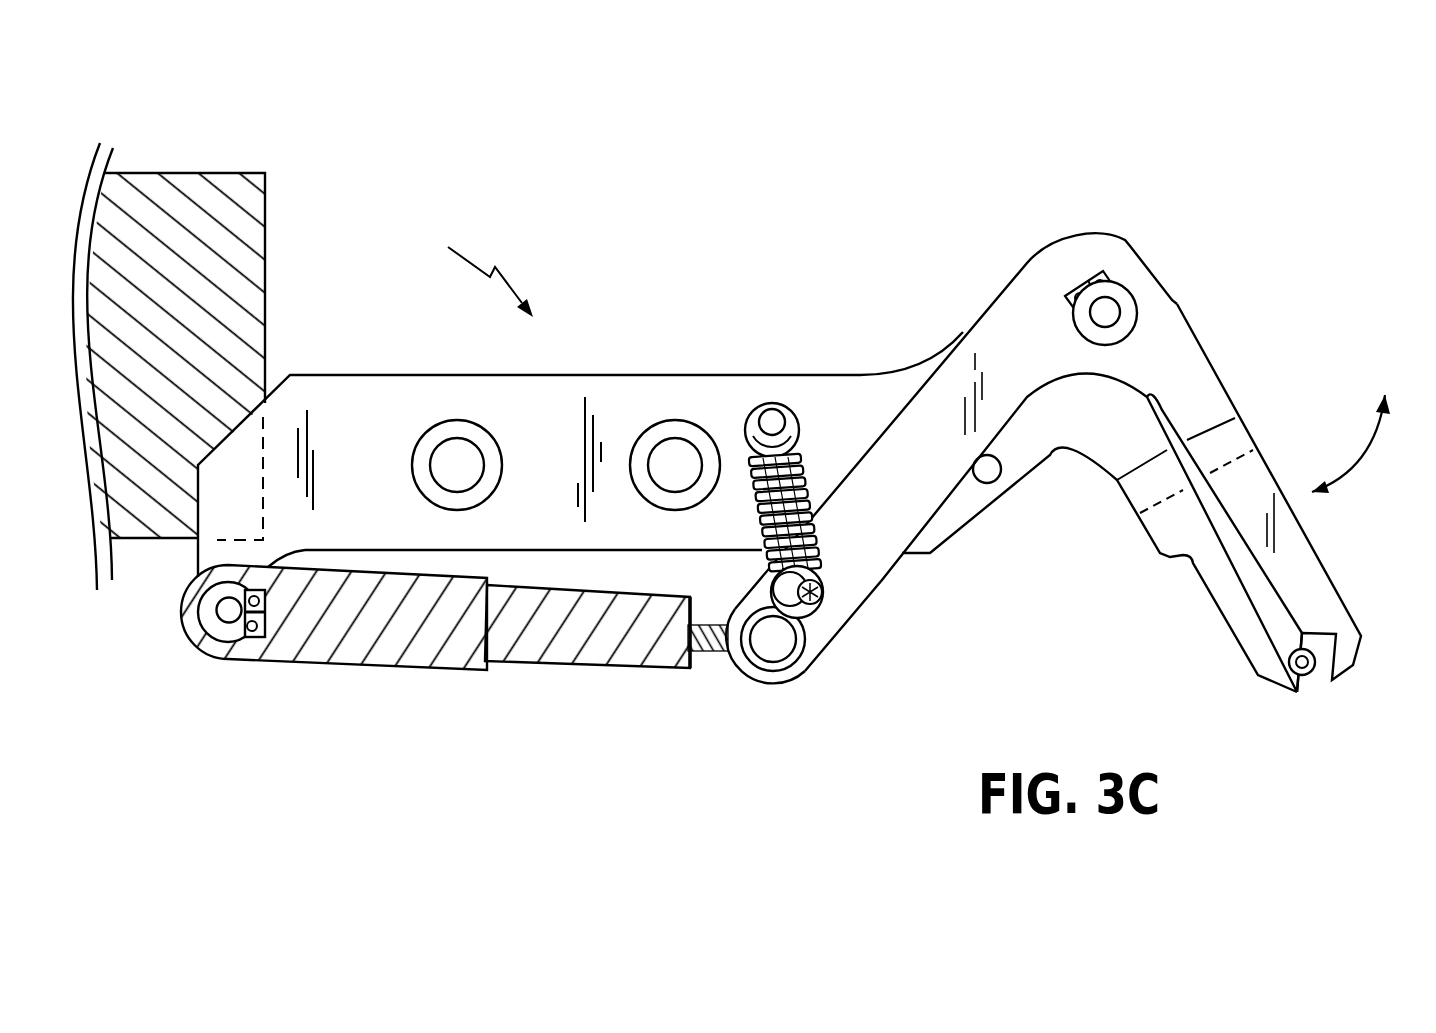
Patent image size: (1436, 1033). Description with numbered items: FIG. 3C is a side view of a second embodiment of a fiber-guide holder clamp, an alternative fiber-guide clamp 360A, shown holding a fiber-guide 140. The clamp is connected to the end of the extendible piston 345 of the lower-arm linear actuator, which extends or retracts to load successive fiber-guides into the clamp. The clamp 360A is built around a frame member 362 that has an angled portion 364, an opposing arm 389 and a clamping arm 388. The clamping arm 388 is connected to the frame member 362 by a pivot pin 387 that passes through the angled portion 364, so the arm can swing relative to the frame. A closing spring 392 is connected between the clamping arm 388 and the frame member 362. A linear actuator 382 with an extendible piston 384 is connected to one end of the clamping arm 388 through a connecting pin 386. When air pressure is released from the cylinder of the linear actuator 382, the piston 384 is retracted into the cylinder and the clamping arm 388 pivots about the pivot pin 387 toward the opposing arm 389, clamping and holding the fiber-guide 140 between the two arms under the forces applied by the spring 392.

The extendible piston 345 is at (200, 173).
The alternative fiber-guide clamp 360A is at (445, 269).
The frame member 362 is at (692, 375).
The angled portion 364 is at (1180, 297).
The linear actuator 382 is at (343, 662).
The extendible piston 384 is at (710, 652).
The connecting pin 386 is at (775, 665).
The pivot pin 387 is at (1120, 297).
The clamping arm 388 is at (1330, 567).
The opposing arm 389 is at (1223, 610).
The closing spring 392 is at (813, 502).
The fiber-guide 140 is at (1310, 675).